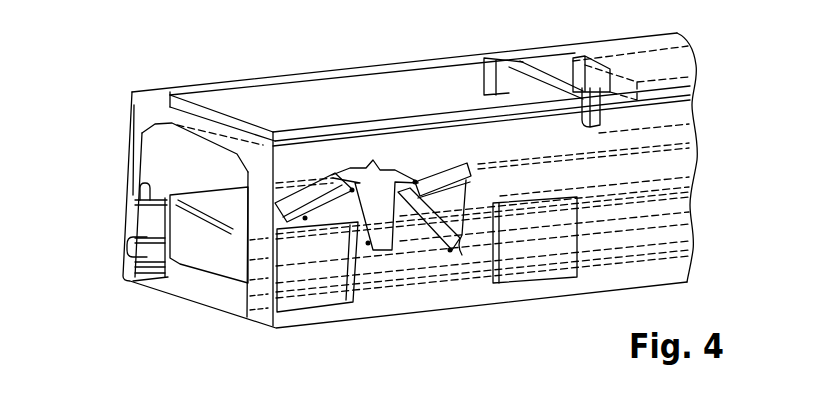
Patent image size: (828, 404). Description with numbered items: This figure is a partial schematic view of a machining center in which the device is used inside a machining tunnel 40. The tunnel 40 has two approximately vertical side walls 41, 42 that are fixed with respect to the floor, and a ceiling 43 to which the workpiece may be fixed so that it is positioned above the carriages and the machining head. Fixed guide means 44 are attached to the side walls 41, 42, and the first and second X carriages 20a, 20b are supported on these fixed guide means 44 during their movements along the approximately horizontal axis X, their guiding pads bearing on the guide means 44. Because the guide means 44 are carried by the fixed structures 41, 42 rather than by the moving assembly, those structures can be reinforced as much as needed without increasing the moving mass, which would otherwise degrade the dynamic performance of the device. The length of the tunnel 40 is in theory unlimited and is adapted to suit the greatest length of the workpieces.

The machining tunnel 40 is at (100, 115).
The side wall 41 is at (133, 157).
The side wall 42 is at (258, 260).
The ceiling 43 is at (208, 125).
The fixed guide means 44 is at (145, 186).
The first carriage 20a is at (319, 257).
The second carriage 20b is at (527, 237).